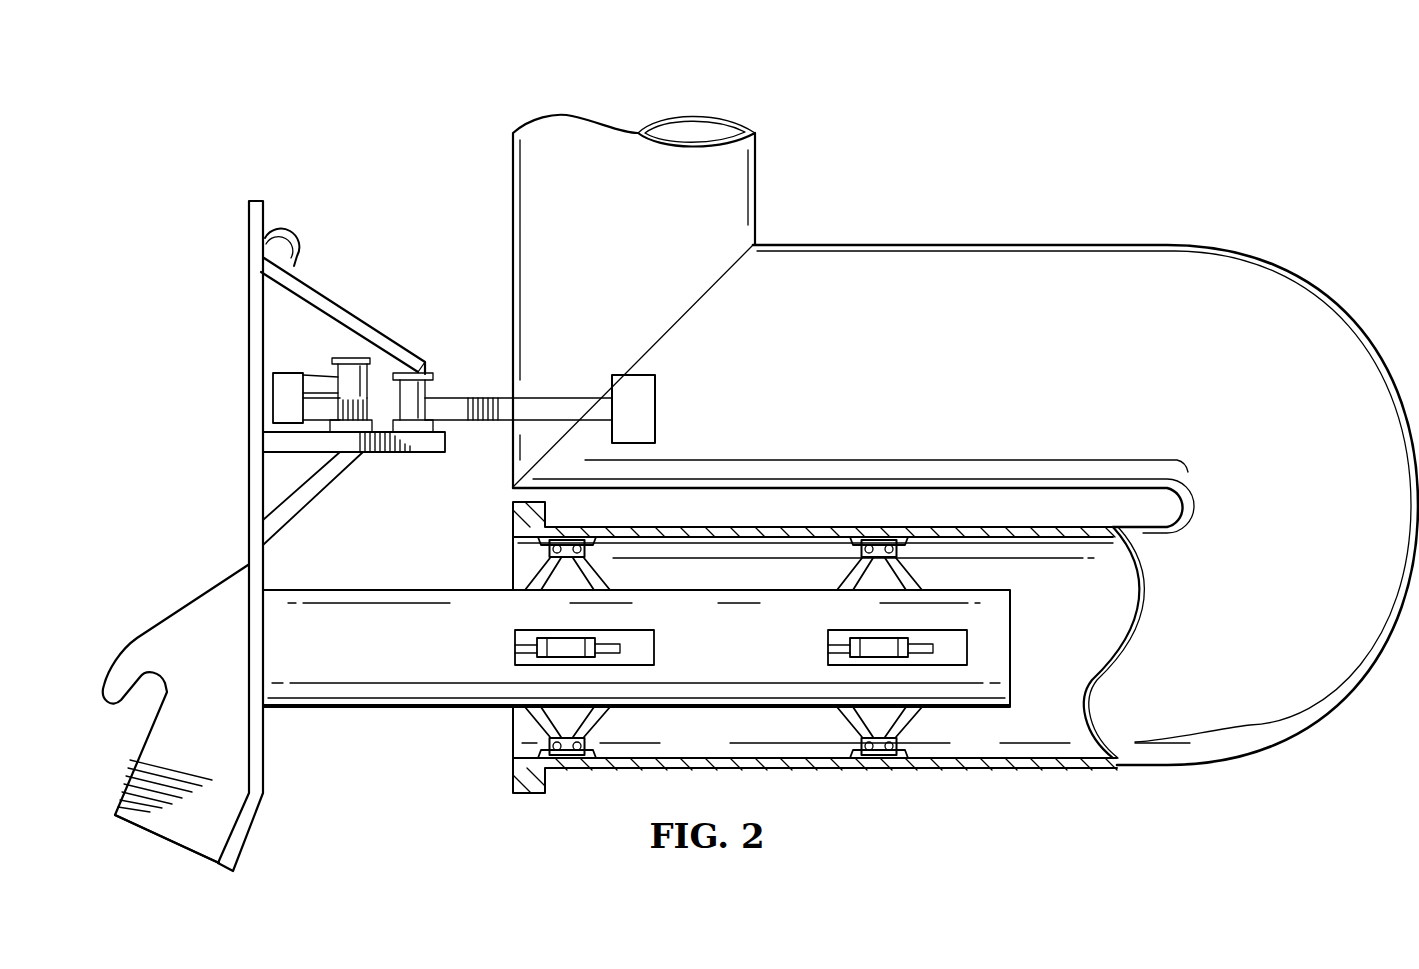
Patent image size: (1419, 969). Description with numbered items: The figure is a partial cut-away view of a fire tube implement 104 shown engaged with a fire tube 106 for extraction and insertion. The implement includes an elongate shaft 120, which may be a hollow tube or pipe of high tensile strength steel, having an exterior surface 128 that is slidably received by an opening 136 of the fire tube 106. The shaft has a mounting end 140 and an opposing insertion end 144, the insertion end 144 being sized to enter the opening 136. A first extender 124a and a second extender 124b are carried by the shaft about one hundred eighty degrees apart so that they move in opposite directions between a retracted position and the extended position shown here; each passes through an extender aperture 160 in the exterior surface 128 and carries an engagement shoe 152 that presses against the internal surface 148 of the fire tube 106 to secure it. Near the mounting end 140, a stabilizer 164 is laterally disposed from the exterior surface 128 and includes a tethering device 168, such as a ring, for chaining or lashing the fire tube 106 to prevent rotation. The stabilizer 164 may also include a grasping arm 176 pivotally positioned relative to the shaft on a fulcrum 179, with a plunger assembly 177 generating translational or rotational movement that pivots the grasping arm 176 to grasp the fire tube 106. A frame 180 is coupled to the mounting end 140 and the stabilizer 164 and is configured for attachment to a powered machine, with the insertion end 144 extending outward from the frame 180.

The fire tube implement 104 is at (250, 95).
The fire tube 106 is at (1030, 244).
The elongate shaft 120 is at (330, 708).
The first extender 124a is at (562, 625).
The second extender 124b is at (875, 625).
The exterior surface 128 is at (383, 710).
The opening 136 is at (513, 568).
The mounting end 140 is at (274, 708).
The insertion end 144 is at (1012, 680).
The internal surface 148 is at (990, 763).
The engagement shoe 152 is at (572, 537).
The extender aperture 160 is at (640, 652).
The stabilizer 164 is at (344, 304).
The tethering device 168 is at (290, 232).
The grasping arm 176 is at (558, 392).
The plunger assembly 177 is at (348, 358).
The fulcrum 179 is at (435, 390).
The frame 180 is at (246, 403).